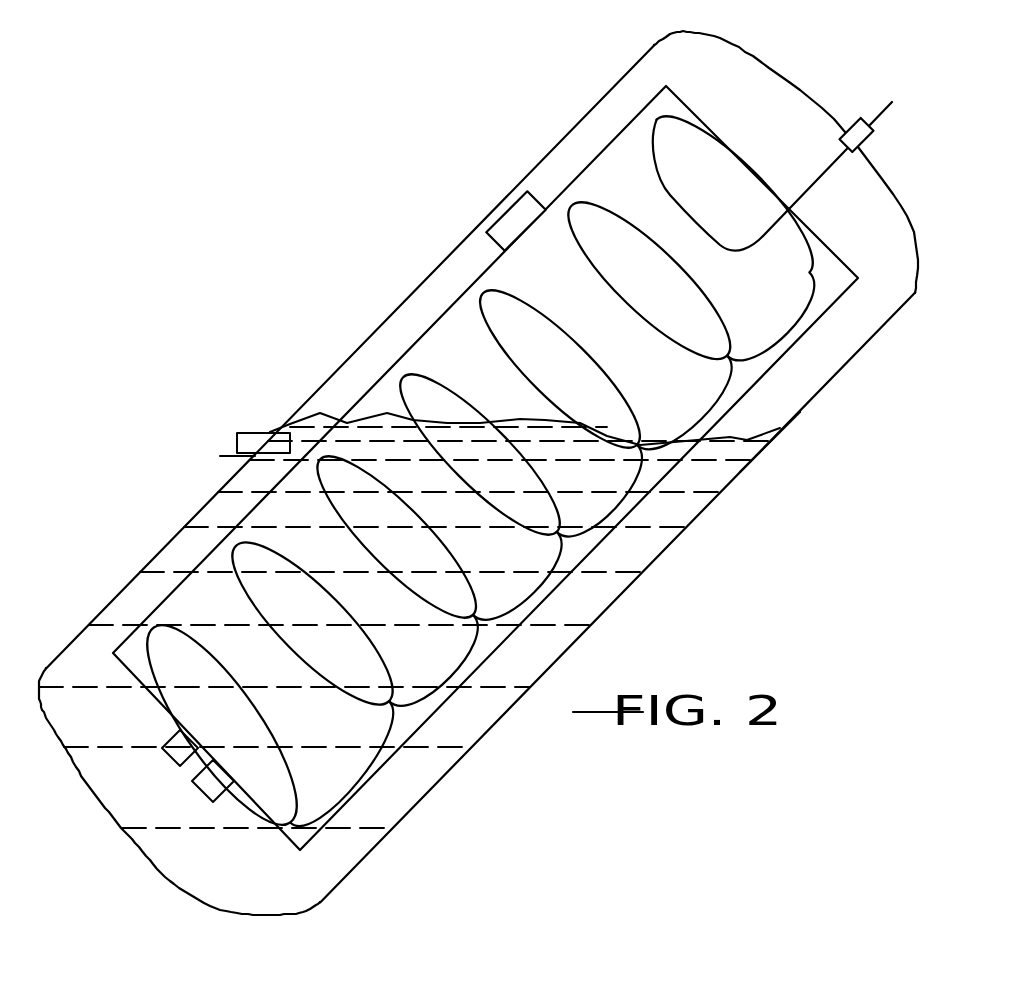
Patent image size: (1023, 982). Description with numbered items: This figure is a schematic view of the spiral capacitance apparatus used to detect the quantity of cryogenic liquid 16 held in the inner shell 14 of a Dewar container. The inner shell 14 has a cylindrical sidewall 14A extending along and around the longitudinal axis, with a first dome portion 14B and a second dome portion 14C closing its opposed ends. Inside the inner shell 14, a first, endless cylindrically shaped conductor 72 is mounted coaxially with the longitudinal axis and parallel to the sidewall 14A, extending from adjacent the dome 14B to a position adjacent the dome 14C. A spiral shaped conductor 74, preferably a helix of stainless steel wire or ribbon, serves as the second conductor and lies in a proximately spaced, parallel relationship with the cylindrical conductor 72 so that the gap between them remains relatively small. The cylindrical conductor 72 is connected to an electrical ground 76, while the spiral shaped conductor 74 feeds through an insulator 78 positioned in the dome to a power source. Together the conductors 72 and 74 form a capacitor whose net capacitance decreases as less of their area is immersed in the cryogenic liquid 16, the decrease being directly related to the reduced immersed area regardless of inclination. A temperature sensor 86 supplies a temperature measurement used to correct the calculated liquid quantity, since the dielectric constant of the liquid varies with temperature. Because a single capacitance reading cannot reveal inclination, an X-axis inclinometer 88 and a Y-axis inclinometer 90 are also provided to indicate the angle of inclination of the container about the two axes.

The inner shell 14 is at (718, 500).
The cylindrical sidewall 14A is at (764, 447).
The first dome portion 14B is at (918, 218).
The second dome portion 14C is at (86, 791).
The cryogenic liquid 16 is at (640, 540).
The cylindrically shaped conductor 72 is at (744, 398).
The spiral shaped conductor 74 is at (484, 296).
The electrical ground 76 is at (237, 436).
The insulator 78 is at (870, 132).
The temperature sensor 86 is at (488, 226).
The X-axis inclinometer 88 is at (178, 767).
The Y-axis inclinometer 90 is at (193, 782).